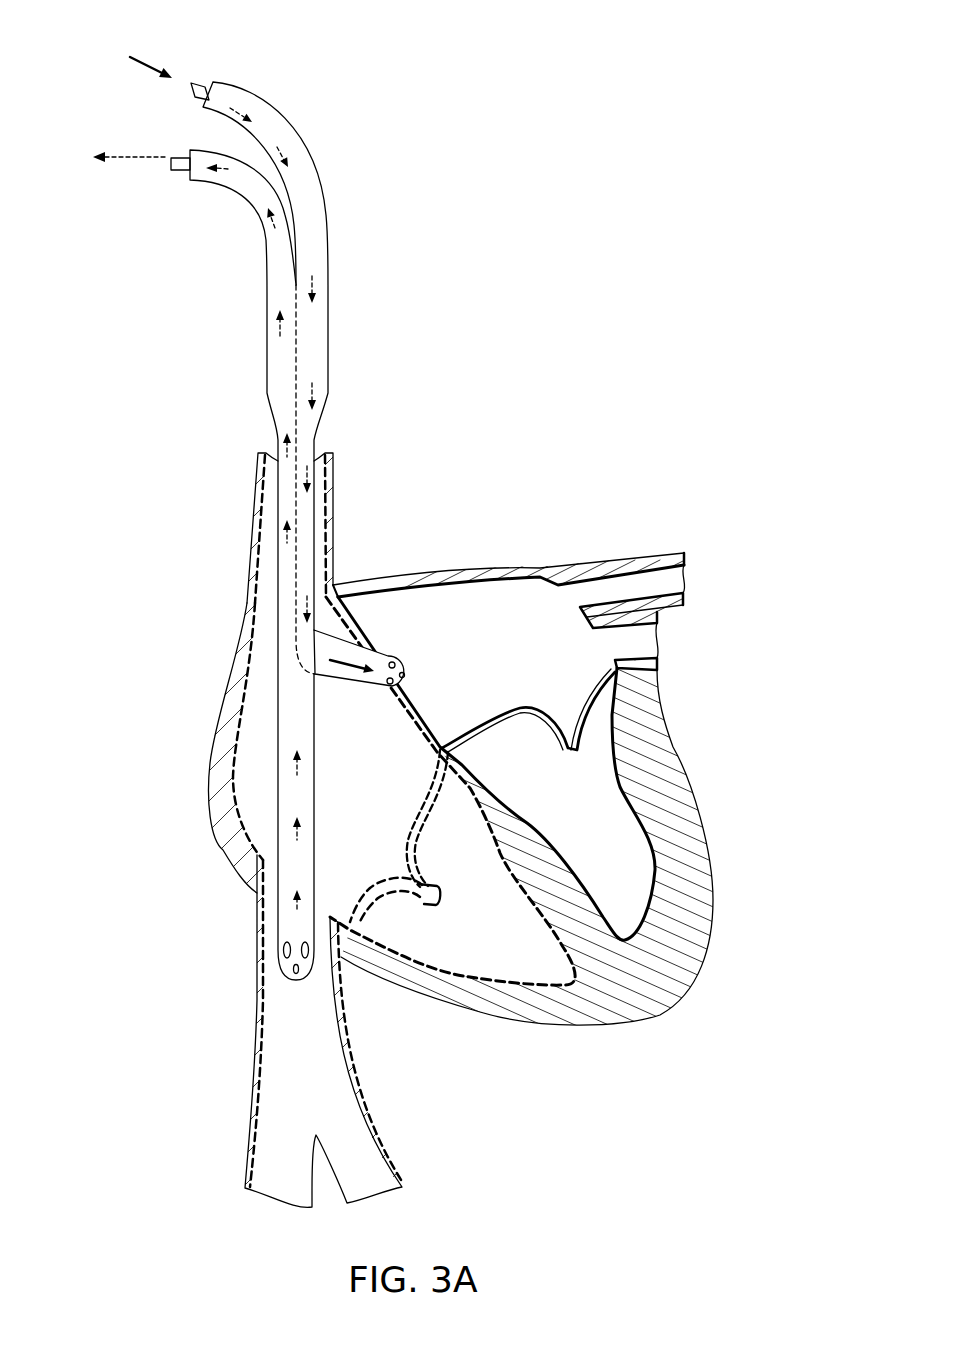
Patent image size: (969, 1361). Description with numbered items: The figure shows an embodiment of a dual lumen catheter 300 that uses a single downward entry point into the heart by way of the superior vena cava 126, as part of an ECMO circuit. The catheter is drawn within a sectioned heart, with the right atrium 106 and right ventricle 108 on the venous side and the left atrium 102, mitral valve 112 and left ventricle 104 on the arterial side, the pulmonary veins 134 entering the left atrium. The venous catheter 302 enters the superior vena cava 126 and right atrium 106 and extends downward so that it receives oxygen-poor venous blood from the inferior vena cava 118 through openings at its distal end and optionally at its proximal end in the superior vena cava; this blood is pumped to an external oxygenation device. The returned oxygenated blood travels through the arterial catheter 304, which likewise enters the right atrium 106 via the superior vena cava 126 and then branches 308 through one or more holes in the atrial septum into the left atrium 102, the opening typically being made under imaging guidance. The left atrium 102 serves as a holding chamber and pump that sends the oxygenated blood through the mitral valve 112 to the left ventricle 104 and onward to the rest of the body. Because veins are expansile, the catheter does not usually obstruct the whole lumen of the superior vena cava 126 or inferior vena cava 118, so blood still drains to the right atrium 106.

The dual lumen catheter 300 is at (342, 505).
The venous catheter 302 is at (210, 183).
The arterial catheter 304 is at (250, 97).
The branch 308 is at (375, 657).
The left atrium 102 is at (572, 582).
The left ventricle 104 is at (617, 853).
The right atrium 106 is at (333, 710).
The right ventricle 108 is at (493, 953).
The mitral valve 112 is at (578, 737).
The inferior vena cava 118 is at (257, 983).
The superior vena cava 126 is at (258, 505).
The pulmonary veins 134 is at (657, 637).